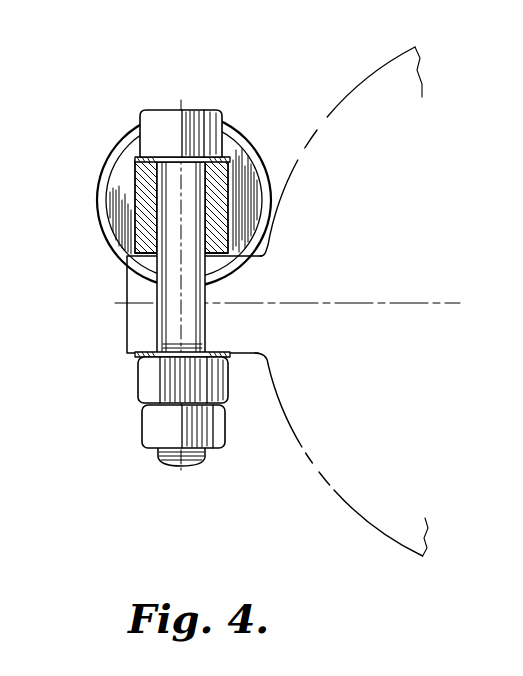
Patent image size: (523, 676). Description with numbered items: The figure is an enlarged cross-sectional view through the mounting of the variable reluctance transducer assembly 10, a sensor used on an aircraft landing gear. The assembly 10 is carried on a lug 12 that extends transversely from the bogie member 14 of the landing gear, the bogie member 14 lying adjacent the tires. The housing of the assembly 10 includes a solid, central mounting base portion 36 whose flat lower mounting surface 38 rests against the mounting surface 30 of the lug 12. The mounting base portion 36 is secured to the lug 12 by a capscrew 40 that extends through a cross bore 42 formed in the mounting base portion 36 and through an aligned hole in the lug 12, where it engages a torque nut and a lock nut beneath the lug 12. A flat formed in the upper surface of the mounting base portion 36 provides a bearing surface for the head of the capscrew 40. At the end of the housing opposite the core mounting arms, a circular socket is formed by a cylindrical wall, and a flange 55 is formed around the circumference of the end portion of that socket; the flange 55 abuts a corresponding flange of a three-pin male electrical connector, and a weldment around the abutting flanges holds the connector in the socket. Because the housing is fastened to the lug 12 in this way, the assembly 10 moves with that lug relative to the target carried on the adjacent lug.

The variable reluctance transducer assembly 10 is at (162, 251).
The lug 12 is at (127, 338).
The bogie member 14 is at (351, 90).
The mounting surface 30 is at (131, 249).
The mounting base portion 36 is at (142, 180).
The flat lower mounting surface 38 is at (150, 282).
The capscrew 40 is at (181, 95).
The cross bore 42 is at (197, 210).
The flange 55 is at (135, 145).